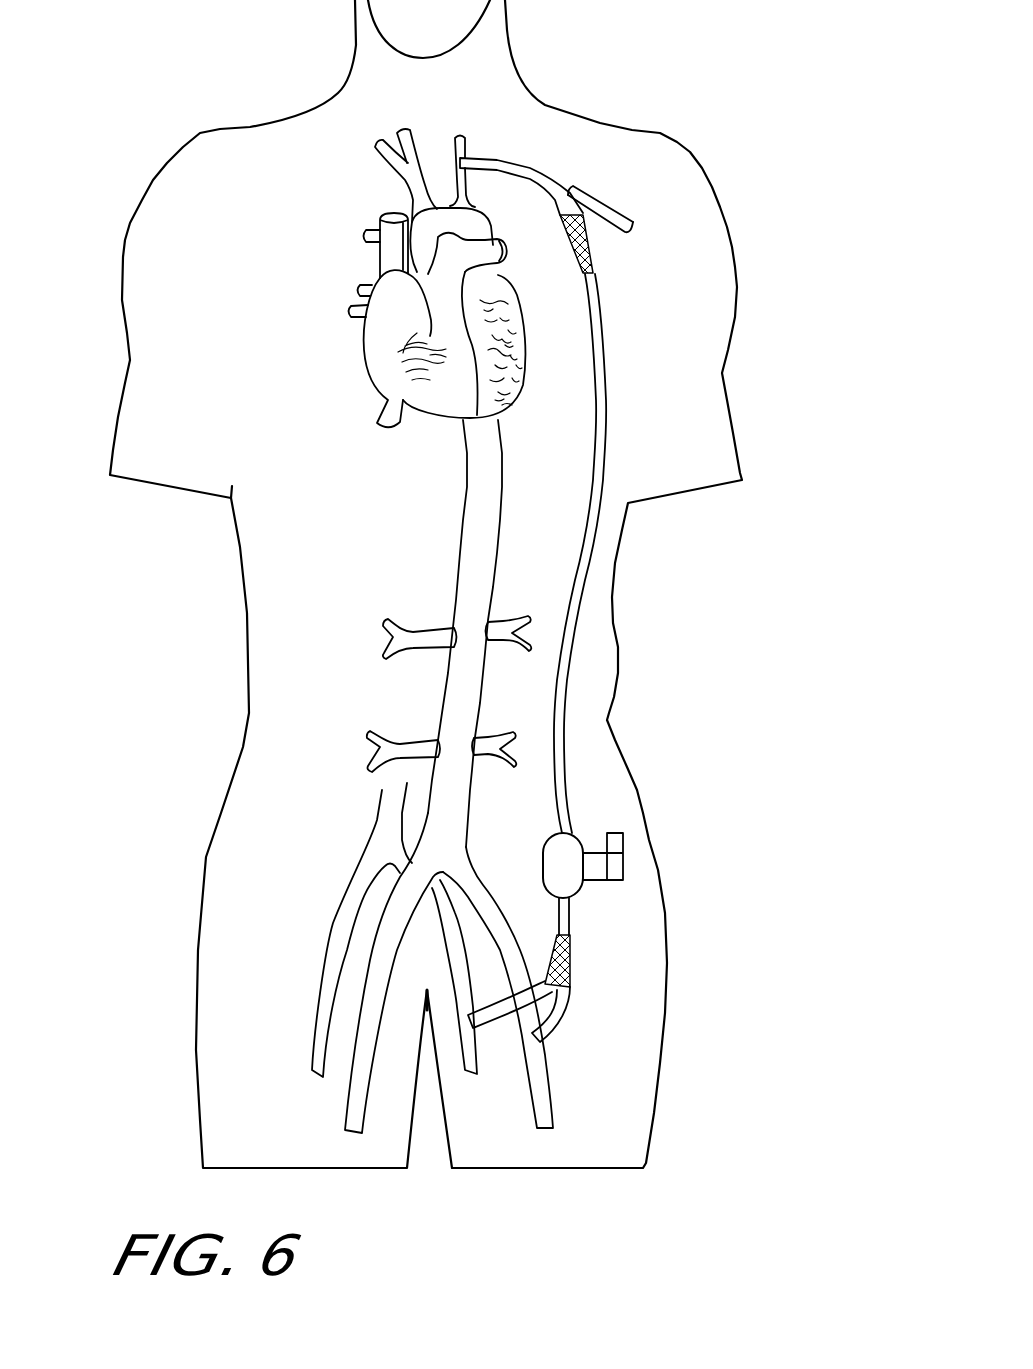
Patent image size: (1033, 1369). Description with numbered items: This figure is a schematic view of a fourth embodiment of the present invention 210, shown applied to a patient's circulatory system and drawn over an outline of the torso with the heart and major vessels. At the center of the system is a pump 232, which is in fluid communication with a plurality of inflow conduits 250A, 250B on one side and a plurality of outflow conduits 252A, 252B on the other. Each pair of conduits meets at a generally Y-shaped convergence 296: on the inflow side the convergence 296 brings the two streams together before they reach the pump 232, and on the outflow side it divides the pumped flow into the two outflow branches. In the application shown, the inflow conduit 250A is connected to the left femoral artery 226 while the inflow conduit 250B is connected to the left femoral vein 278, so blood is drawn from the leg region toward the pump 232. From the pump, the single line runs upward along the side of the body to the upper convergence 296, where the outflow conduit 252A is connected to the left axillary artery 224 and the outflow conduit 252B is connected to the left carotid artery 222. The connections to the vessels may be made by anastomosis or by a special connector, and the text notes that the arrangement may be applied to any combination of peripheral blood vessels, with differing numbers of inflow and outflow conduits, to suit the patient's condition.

The fourth embodiment of the present invention 210 is at (663, 579).
The left carotid artery 222 is at (466, 132).
The left axillary artery 224 is at (616, 205).
The left femoral artery 226 is at (543, 1103).
The pump 232 is at (543, 853).
The inflow conduit 250A is at (552, 1020).
The inflow conduit 250B is at (493, 1013).
The outflow conduit 252A is at (583, 187).
The outflow conduit 252B is at (518, 168).
The left femoral vein 278 is at (480, 1053).
The Y-shaped convergence 296 is at (595, 250).